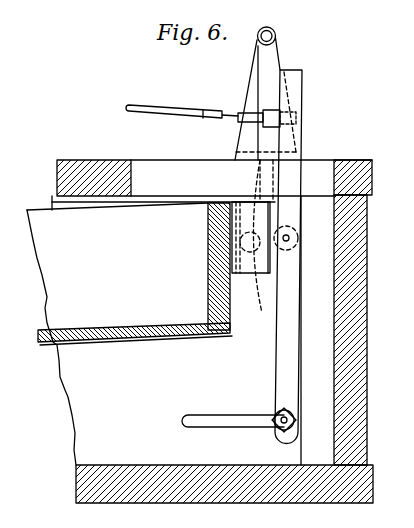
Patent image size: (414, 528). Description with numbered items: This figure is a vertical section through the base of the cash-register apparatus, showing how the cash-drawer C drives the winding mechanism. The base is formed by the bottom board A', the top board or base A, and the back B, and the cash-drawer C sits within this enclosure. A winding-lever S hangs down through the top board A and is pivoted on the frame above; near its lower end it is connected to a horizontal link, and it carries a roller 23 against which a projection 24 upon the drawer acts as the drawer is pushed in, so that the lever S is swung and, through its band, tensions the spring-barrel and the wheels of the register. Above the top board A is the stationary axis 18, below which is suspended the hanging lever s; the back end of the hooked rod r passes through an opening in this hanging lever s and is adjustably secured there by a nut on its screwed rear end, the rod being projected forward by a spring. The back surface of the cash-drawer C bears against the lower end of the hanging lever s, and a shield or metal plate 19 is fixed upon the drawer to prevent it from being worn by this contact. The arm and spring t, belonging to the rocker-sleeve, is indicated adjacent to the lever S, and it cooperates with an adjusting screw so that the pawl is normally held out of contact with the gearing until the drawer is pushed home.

The stationary axis 18 is at (277, 37).
The shield or metal plate 19 is at (251, 251).
The roller 23 is at (297, 247).
The projection 24 is at (253, 241).
The hooked rod r is at (211, 107).
The hanging lever s is at (263, 135).
The arm and spring t is at (270, 175).
The winding-lever S is at (268, 241).
The top board or base A is at (214, 168).
The bottom board A' is at (224, 475).
The back B is at (345, 312).
The cash-drawer C is at (151, 330).